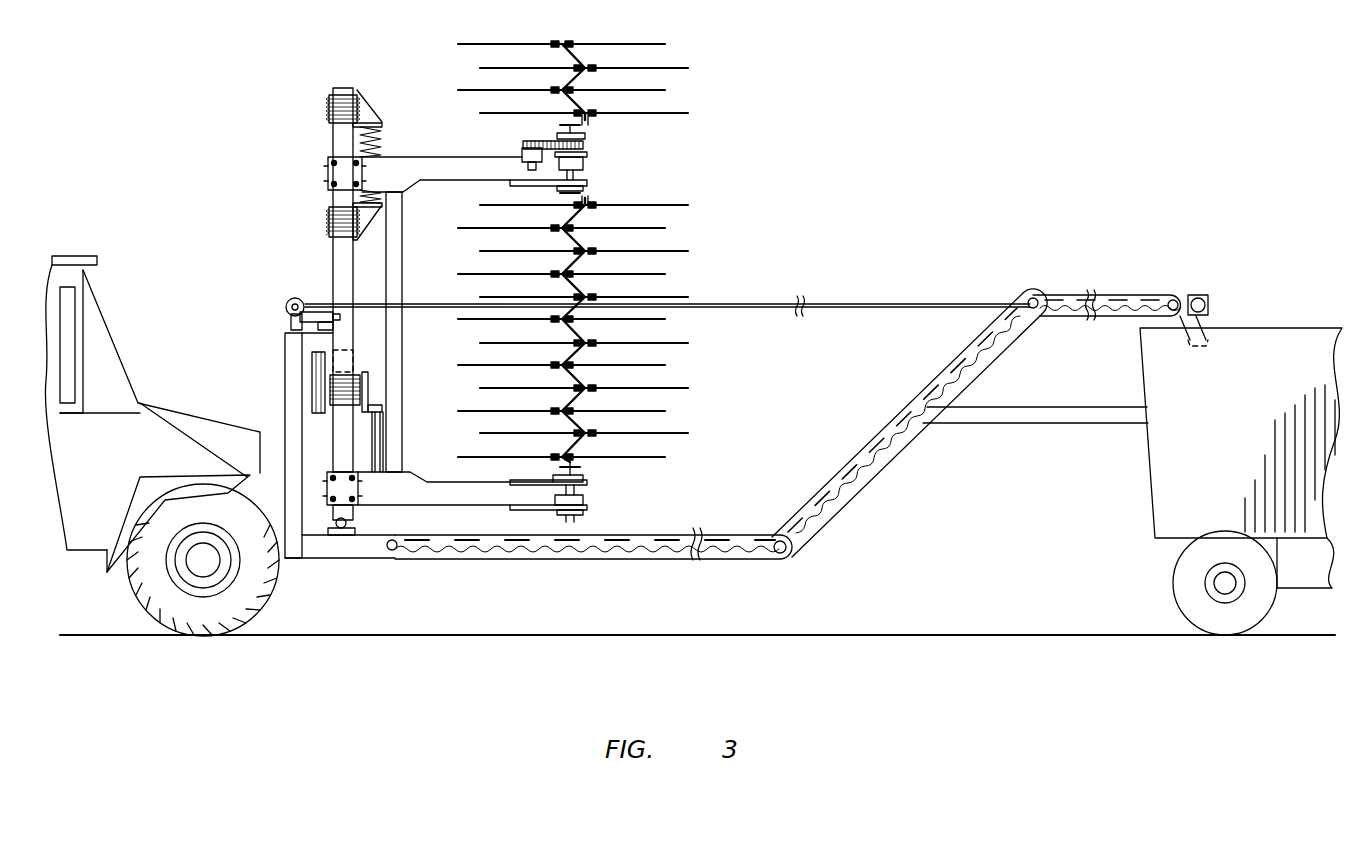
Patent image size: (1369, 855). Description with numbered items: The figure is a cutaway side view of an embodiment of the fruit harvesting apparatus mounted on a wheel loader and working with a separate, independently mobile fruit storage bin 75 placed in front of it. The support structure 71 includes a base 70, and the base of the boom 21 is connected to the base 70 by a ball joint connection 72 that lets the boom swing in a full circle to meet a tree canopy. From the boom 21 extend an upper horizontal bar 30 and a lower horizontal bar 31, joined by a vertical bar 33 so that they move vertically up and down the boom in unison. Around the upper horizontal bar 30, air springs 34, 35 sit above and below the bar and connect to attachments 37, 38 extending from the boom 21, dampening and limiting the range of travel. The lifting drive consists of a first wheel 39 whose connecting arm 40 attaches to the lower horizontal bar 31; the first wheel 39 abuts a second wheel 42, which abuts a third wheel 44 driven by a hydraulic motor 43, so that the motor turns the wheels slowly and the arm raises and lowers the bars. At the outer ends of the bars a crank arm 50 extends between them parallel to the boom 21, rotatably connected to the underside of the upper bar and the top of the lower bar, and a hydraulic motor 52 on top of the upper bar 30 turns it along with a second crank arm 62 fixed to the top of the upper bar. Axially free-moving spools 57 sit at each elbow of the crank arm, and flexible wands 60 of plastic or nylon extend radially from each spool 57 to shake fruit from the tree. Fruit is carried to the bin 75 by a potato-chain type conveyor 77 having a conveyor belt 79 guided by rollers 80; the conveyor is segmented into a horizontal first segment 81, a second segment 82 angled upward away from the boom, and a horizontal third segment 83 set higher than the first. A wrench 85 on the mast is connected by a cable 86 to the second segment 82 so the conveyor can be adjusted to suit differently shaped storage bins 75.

The boom 21 is at (333, 90).
The upper horizontal bar 30 is at (425, 157).
The lower horizontal bar 31 is at (397, 498).
The vertical bar 33 is at (387, 265).
The air spring 34 is at (360, 155).
The air spring 35 is at (330, 187).
The attachment 37 is at (333, 222).
The attachment 38 is at (376, 120).
The first wheel 39 is at (363, 412).
The connecting arm 40 is at (383, 440).
The second wheel 42 is at (313, 387).
The hydraulic motor 43 is at (355, 352).
The third wheel 44 is at (313, 352).
The crank arm 50 is at (588, 218).
The hydraulic motor 52 is at (522, 148).
The spool 57 is at (572, 232).
The wand 60 is at (645, 44).
The second crank arm 62 is at (588, 58).
The base 70 is at (316, 553).
The support structure 71 is at (297, 560).
The ball joint connection 72 is at (343, 530).
The mobile fruit storage bin 75 is at (1272, 328).
The conveyor 77 is at (713, 560).
The conveyor belt 79 is at (872, 478).
The roller 80 is at (393, 552).
The first segment 81 is at (555, 560).
The second segment 82 is at (903, 412).
The third segment 83 is at (1120, 297).
The wrench 85 is at (296, 300).
The cable 86 is at (857, 304).